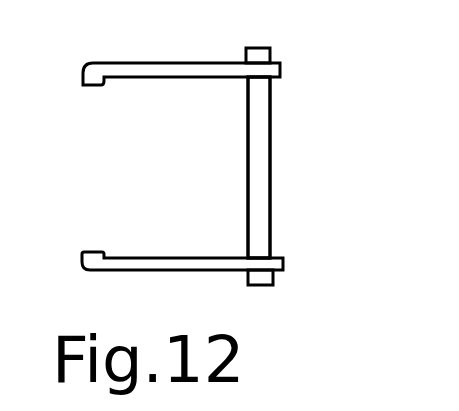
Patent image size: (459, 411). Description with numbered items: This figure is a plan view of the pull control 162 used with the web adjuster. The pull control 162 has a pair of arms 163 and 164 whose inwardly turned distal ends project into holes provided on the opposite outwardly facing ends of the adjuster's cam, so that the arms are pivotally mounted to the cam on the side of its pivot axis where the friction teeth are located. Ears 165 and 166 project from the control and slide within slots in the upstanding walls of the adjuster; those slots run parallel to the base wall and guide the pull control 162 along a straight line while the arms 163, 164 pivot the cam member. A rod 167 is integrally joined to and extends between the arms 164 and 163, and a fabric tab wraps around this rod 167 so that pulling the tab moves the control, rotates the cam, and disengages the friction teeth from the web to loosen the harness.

The pull control 162 is at (282, 102).
The arm 163 is at (132, 260).
The arm 164 is at (123, 70).
The ear 165 is at (264, 280).
The ear 166 is at (262, 54).
The rod 167 is at (272, 133).